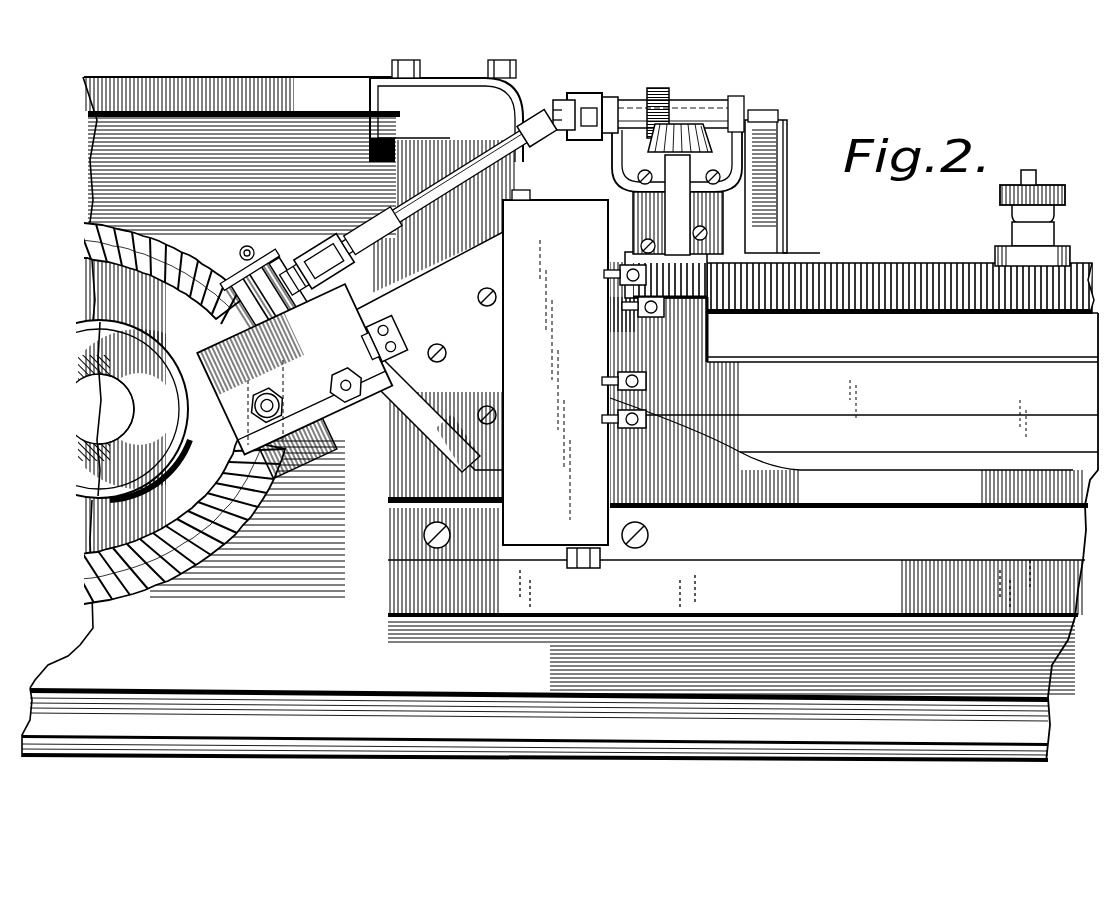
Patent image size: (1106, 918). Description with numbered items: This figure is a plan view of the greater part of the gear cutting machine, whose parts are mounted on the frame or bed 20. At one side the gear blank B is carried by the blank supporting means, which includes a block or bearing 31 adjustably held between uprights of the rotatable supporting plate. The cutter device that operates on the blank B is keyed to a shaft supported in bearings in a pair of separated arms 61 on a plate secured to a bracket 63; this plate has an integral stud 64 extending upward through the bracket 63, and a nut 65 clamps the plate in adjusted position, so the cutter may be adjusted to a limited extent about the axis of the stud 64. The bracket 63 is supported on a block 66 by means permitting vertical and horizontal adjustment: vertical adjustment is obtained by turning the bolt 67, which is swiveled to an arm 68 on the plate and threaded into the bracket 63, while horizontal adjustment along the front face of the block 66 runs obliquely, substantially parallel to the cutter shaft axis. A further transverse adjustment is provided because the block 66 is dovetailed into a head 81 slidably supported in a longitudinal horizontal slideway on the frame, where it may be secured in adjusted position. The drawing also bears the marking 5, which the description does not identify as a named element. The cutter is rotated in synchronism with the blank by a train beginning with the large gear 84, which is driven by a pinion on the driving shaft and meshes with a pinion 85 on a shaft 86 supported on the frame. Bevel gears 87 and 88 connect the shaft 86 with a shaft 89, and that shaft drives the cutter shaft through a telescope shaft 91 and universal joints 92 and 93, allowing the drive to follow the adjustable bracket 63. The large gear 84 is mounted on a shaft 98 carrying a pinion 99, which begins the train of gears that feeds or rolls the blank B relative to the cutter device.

The worm 5 is at (427, 313).
The frame or bed 20 is at (337, 690).
The block or bearing 31 is at (90, 457).
The separated arms 61 is at (213, 373).
The bracket 63 is at (360, 397).
The stud 64 is at (300, 417).
The nut 65 is at (280, 400).
The block 66 is at (480, 382).
The bolt 67 is at (427, 351).
The arm 68 is at (407, 353).
The head 81 is at (513, 445).
The large gear 84 is at (800, 307).
The pinion 85 is at (680, 297).
The shaft 86 is at (680, 218).
The bevel gear 87 is at (687, 117).
The bevel gear 88 is at (660, 93).
The shaft 89 is at (608, 97).
The telescope shaft 91 is at (443, 193).
The universal joint 92 is at (556, 100).
The universal joint 93 is at (307, 250).
The shaft 98 is at (1037, 174).
The pinion 99 is at (1000, 193).
The gear blank B is at (175, 580).